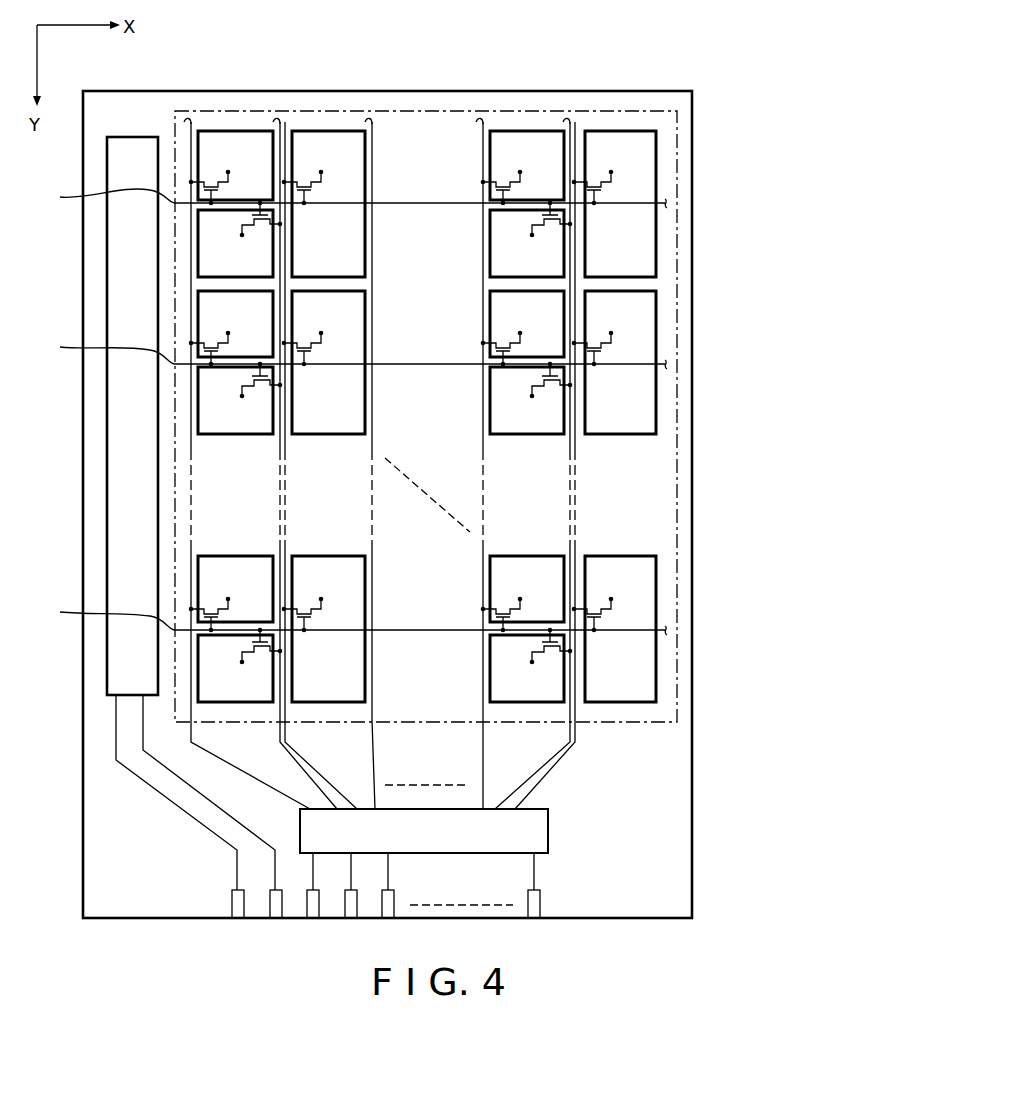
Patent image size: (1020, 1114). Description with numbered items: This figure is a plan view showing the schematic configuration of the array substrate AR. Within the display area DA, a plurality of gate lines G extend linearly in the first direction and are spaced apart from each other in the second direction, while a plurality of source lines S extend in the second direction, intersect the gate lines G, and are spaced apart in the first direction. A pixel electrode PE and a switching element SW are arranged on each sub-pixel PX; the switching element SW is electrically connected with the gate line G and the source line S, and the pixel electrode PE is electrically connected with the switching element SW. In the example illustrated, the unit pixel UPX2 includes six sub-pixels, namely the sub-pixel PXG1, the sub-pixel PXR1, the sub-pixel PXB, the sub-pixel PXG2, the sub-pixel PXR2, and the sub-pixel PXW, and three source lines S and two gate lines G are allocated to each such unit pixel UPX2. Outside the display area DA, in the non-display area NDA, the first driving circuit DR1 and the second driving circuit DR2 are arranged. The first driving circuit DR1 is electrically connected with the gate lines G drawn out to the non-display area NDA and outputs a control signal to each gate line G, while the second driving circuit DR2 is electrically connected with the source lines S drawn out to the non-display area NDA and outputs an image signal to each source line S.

The sub-pixel PX is at (280, 141).
The source line S is at (191, 122).
The pixel electrode PE is at (253, 131).
The switching element SW is at (213, 155).
The display area DA is at (395, 109).
The non-display area NDA is at (461, 99).
The array substrate AR is at (667, 73).
The first driving circuit DR1 is at (107, 169).
The gate line G is at (353, 411).
The sub-pixel PXG1 is at (553, 151).
The sub-pixel PXW is at (650, 175).
The sub-pixel PXR1 is at (553, 245).
The unit pixel UPX2 is at (659, 278).
The sub-pixel PXG2 is at (553, 309).
The sub-pixel PXB is at (662, 362).
The sub-pixel PXR2 is at (553, 403).
The second driving circuit DR2 is at (548, 830).